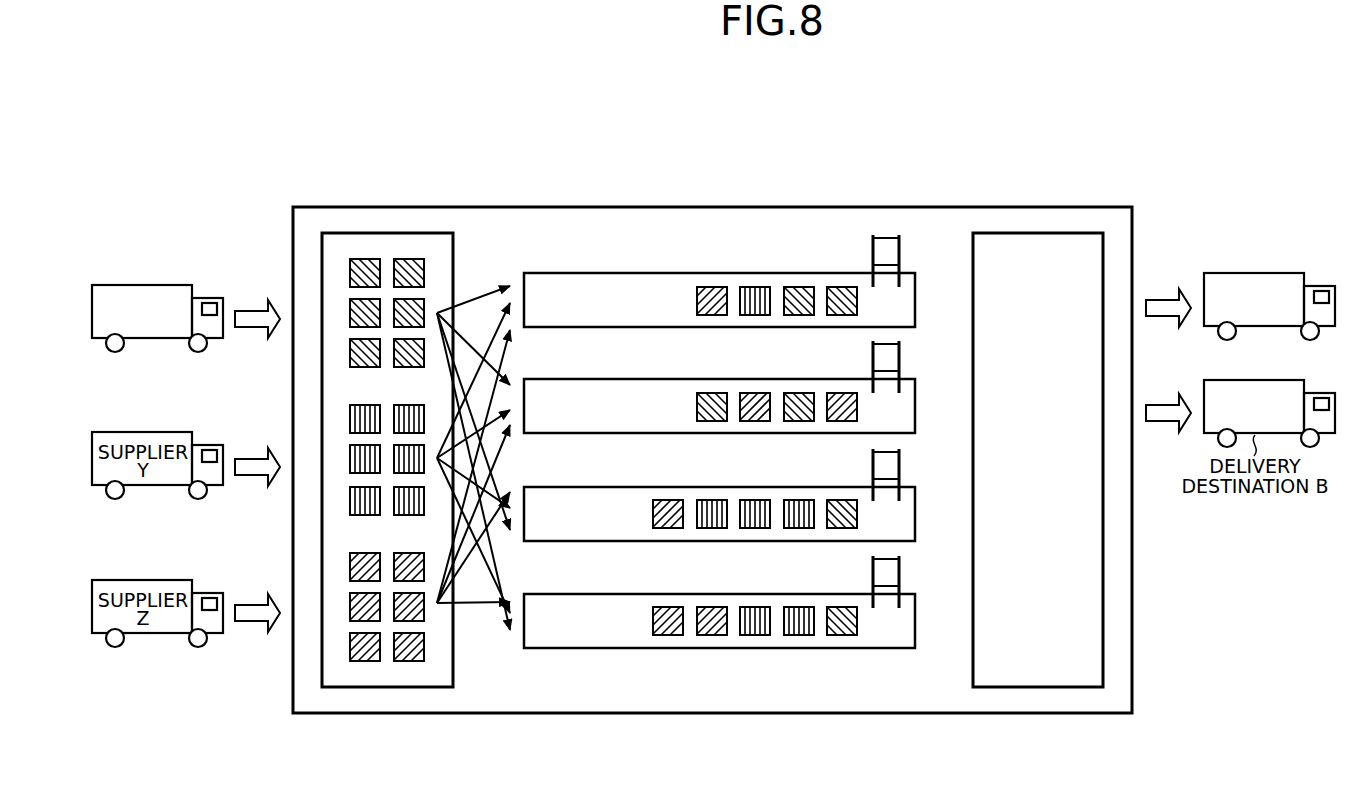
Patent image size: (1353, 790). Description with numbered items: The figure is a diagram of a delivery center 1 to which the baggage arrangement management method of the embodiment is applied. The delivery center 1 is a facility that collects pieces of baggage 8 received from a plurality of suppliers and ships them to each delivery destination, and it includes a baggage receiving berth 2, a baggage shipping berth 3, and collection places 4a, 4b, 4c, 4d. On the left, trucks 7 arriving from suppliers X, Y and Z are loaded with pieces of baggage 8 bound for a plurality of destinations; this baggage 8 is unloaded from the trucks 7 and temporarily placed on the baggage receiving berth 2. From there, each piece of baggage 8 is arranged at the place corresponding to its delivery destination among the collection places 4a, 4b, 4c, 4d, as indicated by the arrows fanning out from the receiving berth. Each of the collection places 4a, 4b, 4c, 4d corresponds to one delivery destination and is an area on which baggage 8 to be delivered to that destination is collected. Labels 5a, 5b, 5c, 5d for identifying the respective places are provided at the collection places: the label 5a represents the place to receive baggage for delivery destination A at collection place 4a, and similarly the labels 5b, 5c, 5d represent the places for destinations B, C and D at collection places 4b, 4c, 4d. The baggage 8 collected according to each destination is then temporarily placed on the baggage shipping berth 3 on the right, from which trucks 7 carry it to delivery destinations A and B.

The delivery center 1 is at (875, 120).
The baggage receiving berth 2 is at (426, 233).
The baggage shipping berth 3 is at (1013, 233).
The collection place 4a is at (660, 273).
The collection place 4b is at (660, 379).
The collection place 4c is at (660, 487).
The collection place 4d is at (660, 594).
The label 5a is at (900, 246).
The label 5b is at (900, 352).
The label 5c is at (900, 460).
The label 5d is at (900, 567).
The truck 7 is at (148, 284).
The baggage 8 is at (362, 258).